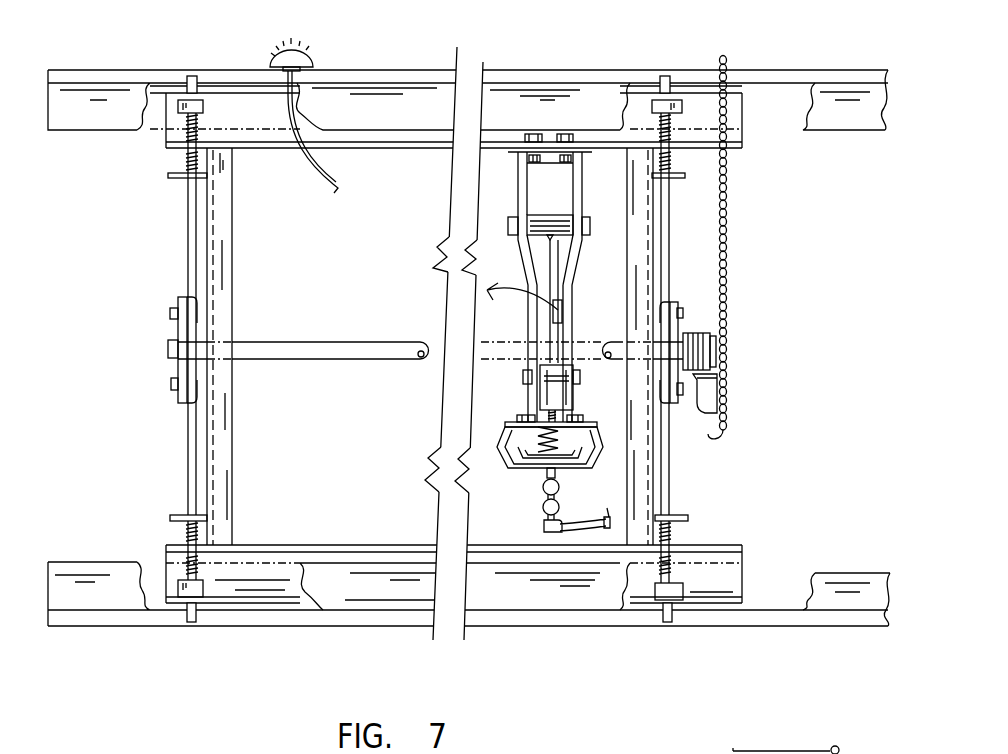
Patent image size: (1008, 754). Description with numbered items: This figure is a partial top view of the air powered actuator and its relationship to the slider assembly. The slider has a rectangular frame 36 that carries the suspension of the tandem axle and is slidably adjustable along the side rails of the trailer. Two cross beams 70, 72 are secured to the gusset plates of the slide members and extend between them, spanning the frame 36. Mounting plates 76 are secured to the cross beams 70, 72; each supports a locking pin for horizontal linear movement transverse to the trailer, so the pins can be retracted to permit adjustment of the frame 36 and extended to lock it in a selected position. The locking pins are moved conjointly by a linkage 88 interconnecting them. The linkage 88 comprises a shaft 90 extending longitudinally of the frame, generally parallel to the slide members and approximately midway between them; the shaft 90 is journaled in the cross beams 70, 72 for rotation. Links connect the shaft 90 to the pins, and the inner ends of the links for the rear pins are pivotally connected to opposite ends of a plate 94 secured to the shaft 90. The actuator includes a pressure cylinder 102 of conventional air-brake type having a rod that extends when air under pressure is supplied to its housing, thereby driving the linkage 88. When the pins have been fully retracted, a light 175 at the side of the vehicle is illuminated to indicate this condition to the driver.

The rectangular frame 36 is at (433, 152).
The cross beam 70 is at (225, 308).
The cross beam 72 is at (638, 207).
The mounting plate 76 is at (177, 513).
The linkage 88 is at (142, 304).
The shaft 90 is at (329, 340).
The plate 94 is at (183, 360).
The pressure cylinder 102 is at (514, 482).
The light 175 is at (305, 50).